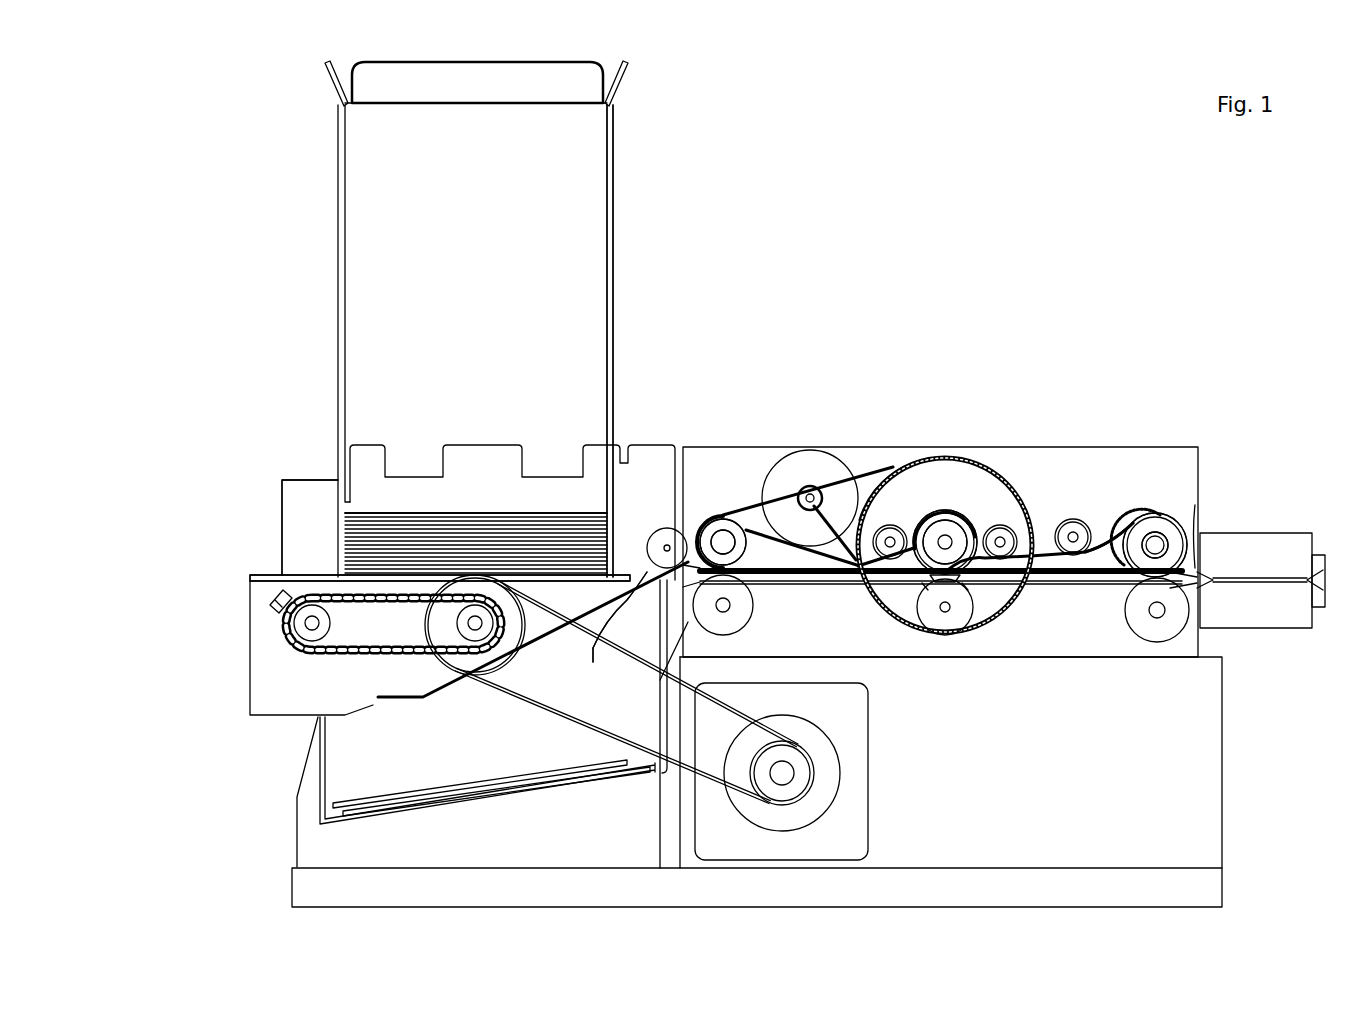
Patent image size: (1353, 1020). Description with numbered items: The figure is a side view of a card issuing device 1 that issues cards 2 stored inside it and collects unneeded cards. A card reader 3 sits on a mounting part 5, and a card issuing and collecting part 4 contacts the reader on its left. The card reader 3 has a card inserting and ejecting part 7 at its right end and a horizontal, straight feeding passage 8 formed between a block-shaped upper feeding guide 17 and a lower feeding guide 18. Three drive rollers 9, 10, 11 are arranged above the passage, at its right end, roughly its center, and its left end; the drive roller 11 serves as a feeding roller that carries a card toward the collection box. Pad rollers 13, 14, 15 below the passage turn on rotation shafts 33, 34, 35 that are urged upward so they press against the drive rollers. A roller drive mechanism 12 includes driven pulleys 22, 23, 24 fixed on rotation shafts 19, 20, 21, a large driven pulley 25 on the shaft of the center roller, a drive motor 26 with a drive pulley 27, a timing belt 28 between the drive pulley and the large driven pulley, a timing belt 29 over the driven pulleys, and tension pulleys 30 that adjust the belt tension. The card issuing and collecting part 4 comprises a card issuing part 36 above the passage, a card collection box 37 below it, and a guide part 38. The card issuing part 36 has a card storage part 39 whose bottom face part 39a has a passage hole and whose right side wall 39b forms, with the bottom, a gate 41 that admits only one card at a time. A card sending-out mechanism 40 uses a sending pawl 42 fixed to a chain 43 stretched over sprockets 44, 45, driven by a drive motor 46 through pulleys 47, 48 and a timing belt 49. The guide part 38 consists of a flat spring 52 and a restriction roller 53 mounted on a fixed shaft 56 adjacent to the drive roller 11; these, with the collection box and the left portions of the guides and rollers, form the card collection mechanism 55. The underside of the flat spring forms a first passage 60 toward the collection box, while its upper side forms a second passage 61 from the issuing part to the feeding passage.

The card issuing device 1 is at (933, 227).
The card 2 is at (413, 513).
The card reader 3 is at (1130, 447).
The card issuing and collecting part 4 is at (338, 260).
The mounting part 5 is at (1222, 780).
The card inserting and ejecting part 7 is at (1272, 533).
The feeding passage 8 is at (813, 576).
The drive roller 9 is at (1153, 512).
The drive roller 10 is at (947, 510).
The drive roller 11 is at (720, 514).
The roller drive mechanism 12 is at (853, 470).
The pad roller 13 is at (1132, 623).
The pad roller 14 is at (898, 625).
The pad roller 15 is at (745, 632).
The upper feeding guide 17 is at (1197, 505).
The lower feeding guide 18 is at (1050, 587).
The rotation shaft 19 is at (1137, 530).
The rotation shaft 20 is at (941, 538).
The rotation shaft 21 is at (735, 535).
The driven pulley 22 is at (1168, 528).
The driven pulley 23 is at (956, 528).
The driven pulley 24 is at (745, 548).
The large driven pulley 25 is at (990, 597).
The drive motor 26 is at (806, 450).
The drive pulley 27 is at (823, 496).
The timing belt 28 is at (886, 465).
The timing belt 29 is at (1107, 528).
The tension pulley 30 is at (890, 537).
The rotation shaft 33 is at (1155, 613).
The rotation shaft 34 is at (946, 613).
The rotation shaft 35 is at (730, 605).
The card issuing part 36 is at (222, 440).
The card collection box 37 is at (453, 810).
The guide part 38 is at (573, 692).
The card storage part 39 is at (342, 453).
The bottom face part 39a is at (270, 575).
The right side wall 39b is at (613, 408).
The card sending-out mechanism 40 is at (310, 566).
The gate 41 is at (622, 567).
The sending pawl 42 is at (270, 603).
The chain 43 is at (330, 654).
The sprocket 44 is at (338, 622).
The sprocket 45 is at (447, 623).
The drive motor 46 is at (870, 765).
The pulley 47 is at (515, 660).
The pulley 48 is at (783, 790).
The timing belt 49 is at (510, 697).
The flat spring 52 is at (593, 608).
The restriction roller 53 is at (628, 580).
The card collection mechanism 55 is at (695, 462).
The fixed shaft 56 is at (667, 547).
The first passage 60 is at (663, 592).
The second passage 61 is at (636, 558).